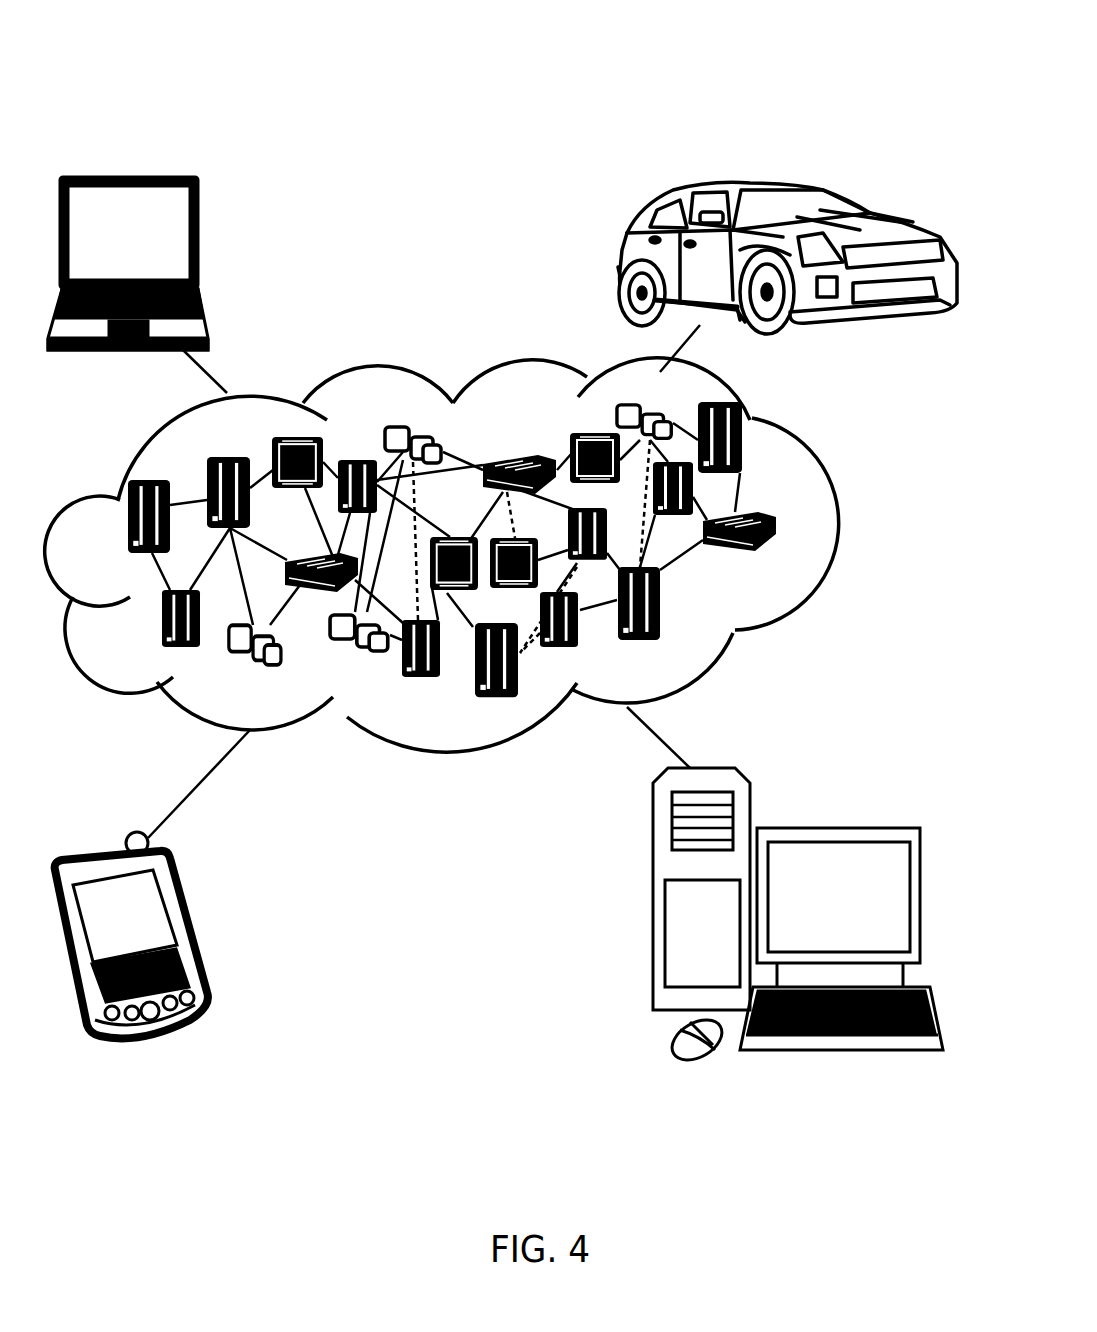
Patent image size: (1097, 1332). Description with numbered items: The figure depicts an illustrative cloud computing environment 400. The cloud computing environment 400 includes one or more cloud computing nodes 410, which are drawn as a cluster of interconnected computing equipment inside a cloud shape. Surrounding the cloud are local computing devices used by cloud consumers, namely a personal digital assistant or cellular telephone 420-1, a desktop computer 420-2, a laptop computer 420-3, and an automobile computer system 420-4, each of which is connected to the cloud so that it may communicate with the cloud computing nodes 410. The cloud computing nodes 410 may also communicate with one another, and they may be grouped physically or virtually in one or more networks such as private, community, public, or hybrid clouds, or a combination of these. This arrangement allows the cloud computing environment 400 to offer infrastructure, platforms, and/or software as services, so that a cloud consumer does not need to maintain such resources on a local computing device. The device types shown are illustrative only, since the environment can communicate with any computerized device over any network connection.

The cloud computing environment 400 is at (781, 38).
The cloud computing nodes 410 is at (794, 560).
The personal digital assistant or cellular telephone 420-1 is at (188, 932).
The desktop computer 420-2 is at (845, 807).
The laptop computer 420-3 is at (197, 242).
The automobile computer system 420-4 is at (620, 258).